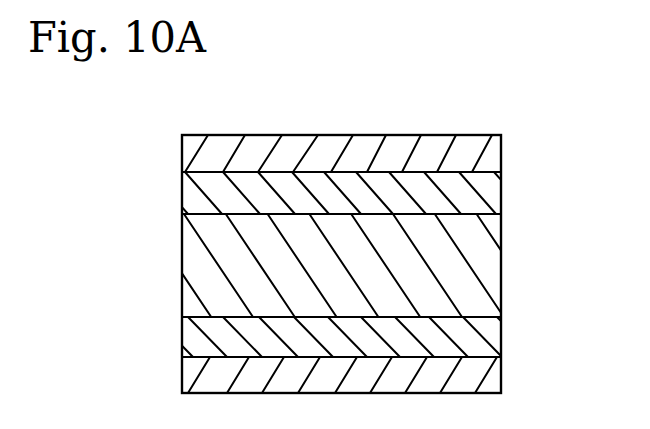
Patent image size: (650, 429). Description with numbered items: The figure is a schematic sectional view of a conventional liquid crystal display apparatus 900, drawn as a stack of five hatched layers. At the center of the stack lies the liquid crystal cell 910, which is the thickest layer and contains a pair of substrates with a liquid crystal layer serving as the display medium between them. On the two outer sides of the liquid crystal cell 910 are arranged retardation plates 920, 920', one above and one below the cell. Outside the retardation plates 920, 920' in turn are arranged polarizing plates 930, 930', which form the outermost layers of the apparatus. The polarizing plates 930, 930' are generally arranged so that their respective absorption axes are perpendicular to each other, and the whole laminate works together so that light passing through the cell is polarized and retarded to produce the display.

The liquid crystal display apparatus 900 is at (491, 83).
The liquid crystal cell 910 is at (488, 272).
The retardation plate 920 is at (384, 337).
The retardation plate 920' is at (386, 193).
The polarizing plate 930 is at (387, 375).
The polarizing plate 930' is at (386, 153).